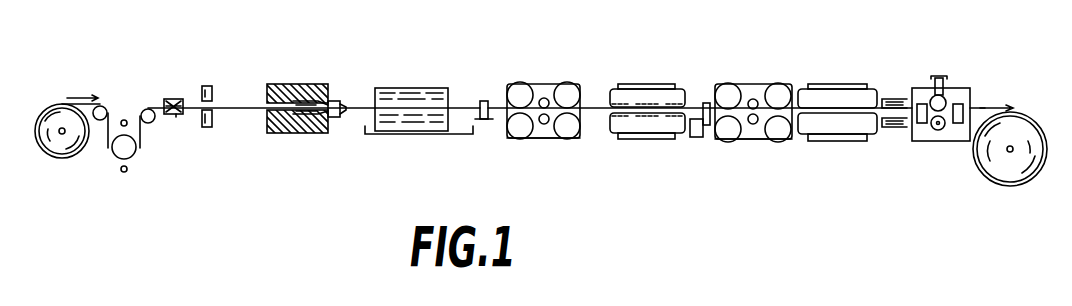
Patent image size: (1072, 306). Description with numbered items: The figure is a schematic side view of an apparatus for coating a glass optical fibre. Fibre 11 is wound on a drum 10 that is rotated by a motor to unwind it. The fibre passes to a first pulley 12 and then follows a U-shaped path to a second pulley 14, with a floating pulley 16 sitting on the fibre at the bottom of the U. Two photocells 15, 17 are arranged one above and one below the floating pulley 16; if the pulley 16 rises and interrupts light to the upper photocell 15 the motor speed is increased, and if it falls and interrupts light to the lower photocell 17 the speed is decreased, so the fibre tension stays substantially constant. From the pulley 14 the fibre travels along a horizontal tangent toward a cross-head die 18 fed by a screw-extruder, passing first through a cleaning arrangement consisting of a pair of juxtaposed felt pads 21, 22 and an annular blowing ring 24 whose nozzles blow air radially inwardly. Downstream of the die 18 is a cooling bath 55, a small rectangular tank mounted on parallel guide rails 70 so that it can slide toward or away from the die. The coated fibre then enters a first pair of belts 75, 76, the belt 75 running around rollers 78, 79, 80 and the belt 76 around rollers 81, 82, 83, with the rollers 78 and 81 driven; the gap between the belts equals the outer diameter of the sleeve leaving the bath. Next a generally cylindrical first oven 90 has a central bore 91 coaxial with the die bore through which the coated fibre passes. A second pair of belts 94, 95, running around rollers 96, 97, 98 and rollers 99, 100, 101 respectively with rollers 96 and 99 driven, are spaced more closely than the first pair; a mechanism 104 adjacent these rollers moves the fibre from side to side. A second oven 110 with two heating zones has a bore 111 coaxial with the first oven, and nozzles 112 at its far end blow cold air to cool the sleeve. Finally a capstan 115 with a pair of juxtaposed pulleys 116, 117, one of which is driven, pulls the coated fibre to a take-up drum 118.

The drum 10 is at (56, 148).
The fibre 11 is at (100, 95).
The first pulley 12 is at (105, 103).
The second pulley 14 is at (153, 122).
The photocell 15 is at (124, 118).
The floating pulley 16 is at (114, 152).
The photocell 17 is at (126, 171).
The cross-head die 18 is at (300, 132).
The felt pad 21 is at (174, 98).
The felt pad 22 is at (178, 114).
The annular blowing ring 24 is at (213, 92).
The cooling bath 55 is at (446, 87).
The guide rails 70 is at (450, 134).
The belt 75 is at (528, 83).
The belt 76 is at (552, 137).
The roller 78 is at (515, 90).
The roller 79 is at (575, 90).
The roller 80 is at (547, 97).
The roller 81 is at (517, 128).
The roller 82 is at (572, 126).
The roller 83 is at (544, 123).
The first oven 90 is at (640, 96).
The central cylindrical bore 91 is at (608, 112).
The belt 94 is at (730, 83).
The belt 95 is at (757, 137).
The roller 96 is at (720, 92).
The roller 97 is at (783, 92).
The roller 98 is at (755, 98).
The roller 99 is at (726, 132).
The roller 100 is at (780, 137).
The roller 101 is at (753, 127).
The mechanism 104 is at (692, 136).
The second oven 110 is at (840, 95).
The cylindrical bore 111 is at (800, 116).
The nozzles 112 is at (895, 98).
The capstan 115 is at (959, 81).
The pulley 116 is at (947, 100).
The pulley 117 is at (939, 130).
The take-up drum 118 is at (992, 165).